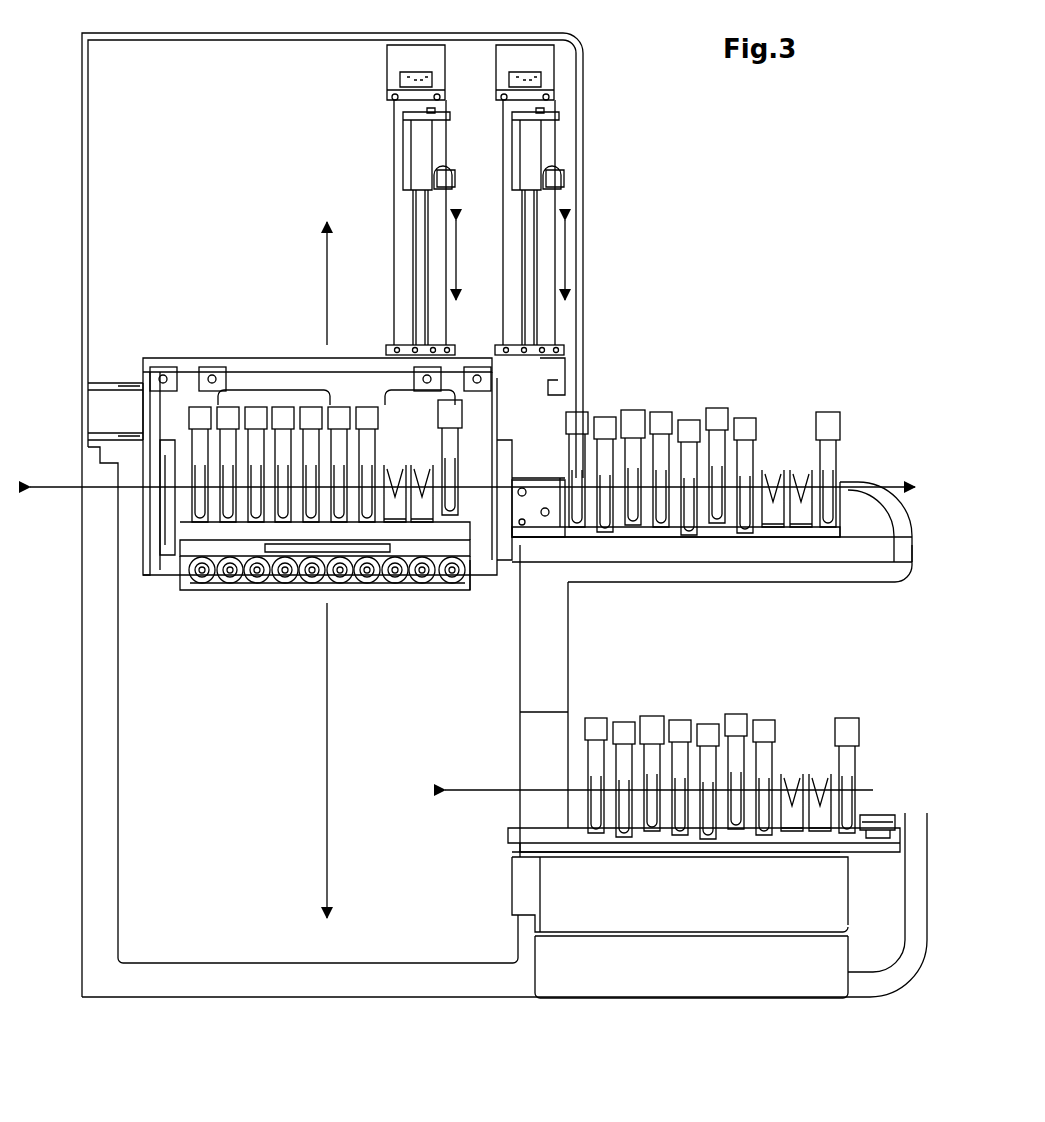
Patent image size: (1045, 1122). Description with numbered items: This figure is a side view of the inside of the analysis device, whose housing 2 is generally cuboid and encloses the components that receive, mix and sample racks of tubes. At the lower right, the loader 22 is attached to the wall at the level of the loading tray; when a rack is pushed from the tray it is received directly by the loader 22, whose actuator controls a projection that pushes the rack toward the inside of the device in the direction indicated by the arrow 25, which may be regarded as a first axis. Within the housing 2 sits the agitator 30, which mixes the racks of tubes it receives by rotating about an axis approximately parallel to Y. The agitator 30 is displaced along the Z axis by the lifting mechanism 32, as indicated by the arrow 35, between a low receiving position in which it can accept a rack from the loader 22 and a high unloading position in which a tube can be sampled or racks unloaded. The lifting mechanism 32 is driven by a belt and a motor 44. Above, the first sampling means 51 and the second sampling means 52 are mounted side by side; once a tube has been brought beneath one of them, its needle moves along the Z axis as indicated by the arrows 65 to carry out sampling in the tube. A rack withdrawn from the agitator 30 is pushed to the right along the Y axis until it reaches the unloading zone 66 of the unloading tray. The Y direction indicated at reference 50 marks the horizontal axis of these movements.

The housing 2 is at (98, 583).
The loader 22 is at (878, 817).
The arrow 25 is at (480, 784).
The agitator 30 is at (262, 412).
The lifting mechanism 32 is at (298, 365).
The arrow 35 is at (326, 732).
The motor 44 is at (113, 408).
The y-direction drive 50 is at (60, 487).
The first sampling means 51 is at (395, 173).
The second sampling means 52 is at (583, 198).
The arrows 65 is at (458, 258).
The unloading zone 66 is at (857, 463).